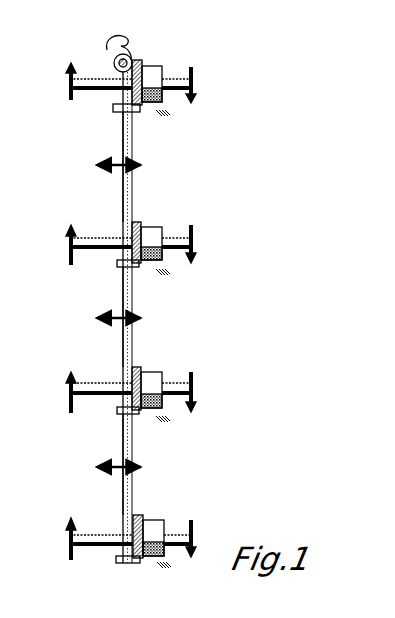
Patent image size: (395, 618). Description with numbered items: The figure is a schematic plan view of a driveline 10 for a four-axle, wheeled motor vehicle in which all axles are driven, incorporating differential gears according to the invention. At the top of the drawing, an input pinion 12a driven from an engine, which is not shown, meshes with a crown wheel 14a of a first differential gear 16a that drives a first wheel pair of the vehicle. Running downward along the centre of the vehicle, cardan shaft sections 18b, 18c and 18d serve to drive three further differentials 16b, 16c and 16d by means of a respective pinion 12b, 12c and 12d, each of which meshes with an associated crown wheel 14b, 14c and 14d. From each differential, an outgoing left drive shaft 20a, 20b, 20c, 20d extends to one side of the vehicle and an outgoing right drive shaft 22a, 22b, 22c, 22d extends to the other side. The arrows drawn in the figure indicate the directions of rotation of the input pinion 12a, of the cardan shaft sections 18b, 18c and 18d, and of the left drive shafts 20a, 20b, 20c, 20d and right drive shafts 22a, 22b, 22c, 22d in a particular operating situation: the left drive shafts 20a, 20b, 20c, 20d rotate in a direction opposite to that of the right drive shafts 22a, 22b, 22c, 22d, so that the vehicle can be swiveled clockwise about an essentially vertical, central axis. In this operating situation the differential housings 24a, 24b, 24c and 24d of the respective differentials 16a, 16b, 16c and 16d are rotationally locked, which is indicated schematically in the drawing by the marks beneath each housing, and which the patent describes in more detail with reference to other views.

The driveline 10 is at (249, 188).
The input pinion 12a is at (129, 60).
The pinion 12b is at (120, 264).
The pinion 12c is at (119, 413).
The pinion 12d is at (120, 565).
The crown wheel 14a is at (133, 100).
The crown wheel 14b is at (137, 226).
The crown wheel 14c is at (139, 375).
The crown wheel 14d is at (136, 520).
The first differential gear 16a is at (167, 105).
The differential 16b is at (168, 263).
The differential 16c is at (168, 410).
The differential 16d is at (168, 565).
The cardan shaft section 18b is at (132, 186).
The cardan shaft section 18c is at (133, 340).
The cardan shaft section 18d is at (131, 492).
The left drive shaft 20a is at (99, 79).
The left drive shaft 20b is at (98, 241).
The left drive shaft 20c is at (103, 376).
The left drive shaft 20d is at (96, 545).
The right drive shaft 22a is at (174, 89).
The right drive shaft 22b is at (177, 251).
The right drive shaft 22c is at (178, 396).
The right drive shaft 22d is at (179, 551).
The differential housing 24a is at (151, 74).
The differential housing 24b is at (156, 235).
The differential housing 24c is at (158, 380).
The differential housing 24d is at (157, 528).